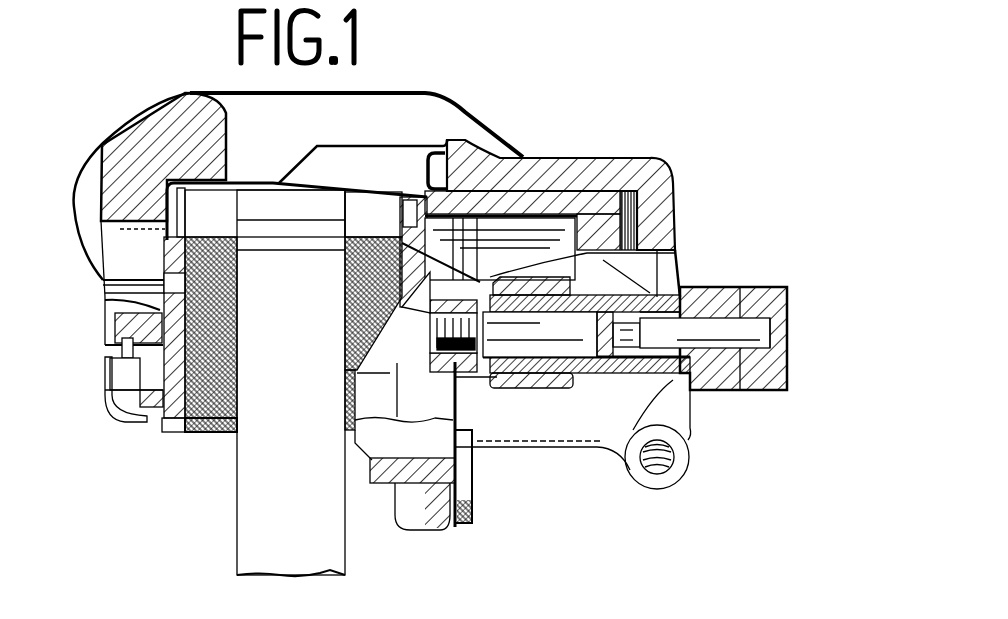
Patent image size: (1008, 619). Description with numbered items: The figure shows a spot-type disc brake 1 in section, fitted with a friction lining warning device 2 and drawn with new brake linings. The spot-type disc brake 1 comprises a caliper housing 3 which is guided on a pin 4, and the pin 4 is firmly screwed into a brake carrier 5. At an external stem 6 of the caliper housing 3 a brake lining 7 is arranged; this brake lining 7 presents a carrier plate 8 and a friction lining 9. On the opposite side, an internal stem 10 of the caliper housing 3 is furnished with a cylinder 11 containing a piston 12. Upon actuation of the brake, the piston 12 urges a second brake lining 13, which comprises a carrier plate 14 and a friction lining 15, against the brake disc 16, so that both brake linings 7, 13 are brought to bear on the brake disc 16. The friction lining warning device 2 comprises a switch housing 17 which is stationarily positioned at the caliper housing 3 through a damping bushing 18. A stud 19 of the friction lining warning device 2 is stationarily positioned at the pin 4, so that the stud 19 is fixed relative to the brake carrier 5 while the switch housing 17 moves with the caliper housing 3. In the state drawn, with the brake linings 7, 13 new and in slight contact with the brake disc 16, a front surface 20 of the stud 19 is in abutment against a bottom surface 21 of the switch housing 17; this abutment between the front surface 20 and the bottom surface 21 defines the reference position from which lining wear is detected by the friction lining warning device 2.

The spot-type disc brake 1 is at (703, 175).
The friction lining warning device 2 is at (800, 268).
The caliper housing 3 is at (455, 122).
The pin 4 is at (533, 333).
The brake carrier 5 is at (437, 520).
The external stem 6 is at (107, 285).
The brake lining 7 is at (178, 460).
The carrier plate 8 is at (168, 433).
The friction lining 9 is at (211, 433).
The internal stem 10 is at (630, 172).
The cylinder 11 is at (640, 222).
The piston 12 is at (553, 197).
The brake lining 13 is at (378, 228).
The carrier plate 14 is at (395, 243).
The friction lining 15 is at (363, 237).
The brake disc 16 is at (240, 532).
The switch housing 17 is at (782, 318).
The damping bushing 18 is at (587, 370).
The stud 19 is at (718, 290).
The front surface 20 is at (757, 287).
The bottom surface 21 is at (790, 345).